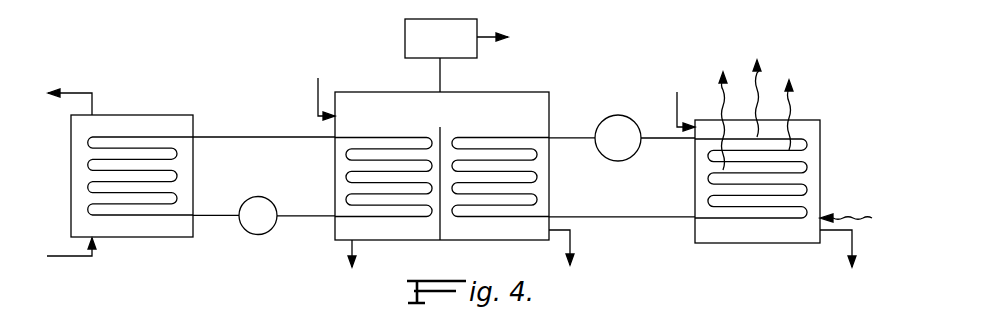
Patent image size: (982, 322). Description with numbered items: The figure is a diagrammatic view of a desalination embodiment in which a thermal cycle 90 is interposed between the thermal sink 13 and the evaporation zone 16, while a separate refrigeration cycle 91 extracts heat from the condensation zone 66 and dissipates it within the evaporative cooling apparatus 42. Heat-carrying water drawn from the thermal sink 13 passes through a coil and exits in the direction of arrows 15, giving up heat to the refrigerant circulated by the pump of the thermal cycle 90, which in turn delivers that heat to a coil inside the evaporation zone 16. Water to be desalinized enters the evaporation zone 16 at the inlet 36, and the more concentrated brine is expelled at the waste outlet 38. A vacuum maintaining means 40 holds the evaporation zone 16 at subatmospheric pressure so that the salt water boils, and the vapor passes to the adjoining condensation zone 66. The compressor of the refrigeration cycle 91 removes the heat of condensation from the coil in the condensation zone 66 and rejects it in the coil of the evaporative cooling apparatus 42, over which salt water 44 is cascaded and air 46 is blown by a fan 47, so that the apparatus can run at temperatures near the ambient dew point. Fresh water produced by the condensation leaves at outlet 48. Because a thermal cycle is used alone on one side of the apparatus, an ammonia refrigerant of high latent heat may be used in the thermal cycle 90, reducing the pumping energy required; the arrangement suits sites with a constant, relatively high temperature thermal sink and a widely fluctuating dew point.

The thermal sink 13 is at (127, 234).
The arrows 15 is at (67, 93).
The evaporation zone 16 is at (418, 236).
The inlet 36 is at (318, 97).
The waste outlet 38 is at (358, 247).
The vacuum maintaining means 40 is at (456, 55).
The evaporative cooling apparatus 42 is at (774, 240).
The salt water 44 is at (677, 101).
The air 46 is at (760, 108).
The fan 47 is at (827, 205).
The fresh water 48 is at (575, 238).
The condensation zone 66 is at (483, 236).
The thermal cycle 90 is at (234, 231).
The refrigeration cycle 91 is at (610, 104).